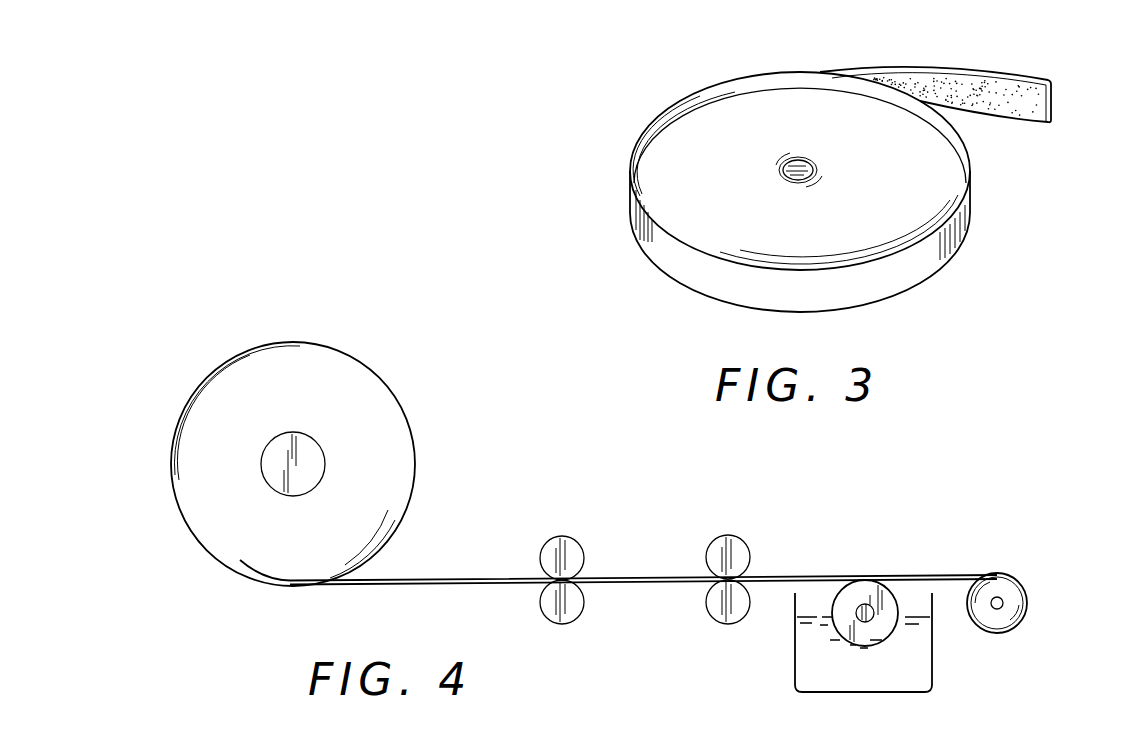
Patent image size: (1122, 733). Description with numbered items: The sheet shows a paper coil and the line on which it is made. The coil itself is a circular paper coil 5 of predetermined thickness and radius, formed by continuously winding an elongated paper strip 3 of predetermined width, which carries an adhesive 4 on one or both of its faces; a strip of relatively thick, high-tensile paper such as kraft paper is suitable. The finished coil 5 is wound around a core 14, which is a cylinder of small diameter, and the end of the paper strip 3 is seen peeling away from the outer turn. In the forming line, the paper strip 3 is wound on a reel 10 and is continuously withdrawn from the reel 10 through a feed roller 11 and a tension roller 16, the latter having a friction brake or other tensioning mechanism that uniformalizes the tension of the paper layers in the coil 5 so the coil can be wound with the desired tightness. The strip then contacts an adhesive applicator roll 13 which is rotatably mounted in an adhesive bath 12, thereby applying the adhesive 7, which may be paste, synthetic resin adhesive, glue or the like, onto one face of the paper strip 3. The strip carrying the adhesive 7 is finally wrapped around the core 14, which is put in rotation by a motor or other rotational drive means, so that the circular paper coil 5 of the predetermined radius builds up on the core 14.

In FIG. 3, the paper strip 3 is at (953, 232).
In FIG. 4, the paper strip 3 is at (447, 580).
In FIG. 3, the adhesive 4 is at (988, 93).
In FIG. 3, the paper coil 5 is at (681, 101).
In FIG. 3, the core 14 is at (818, 172).
In FIG. 4, the core 14 is at (1003, 597).
In FIG. 4, the reel 10 is at (417, 437).
In FIG. 4, the tension roller 16 is at (570, 600).
In FIG. 4, the feed roller 11 is at (733, 597).
In FIG. 4, the adhesive bath 12 is at (797, 663).
In FIG. 4, the adhesive 7 is at (912, 632).
In FIG. 4, the adhesive applicator roll 13 is at (880, 583).